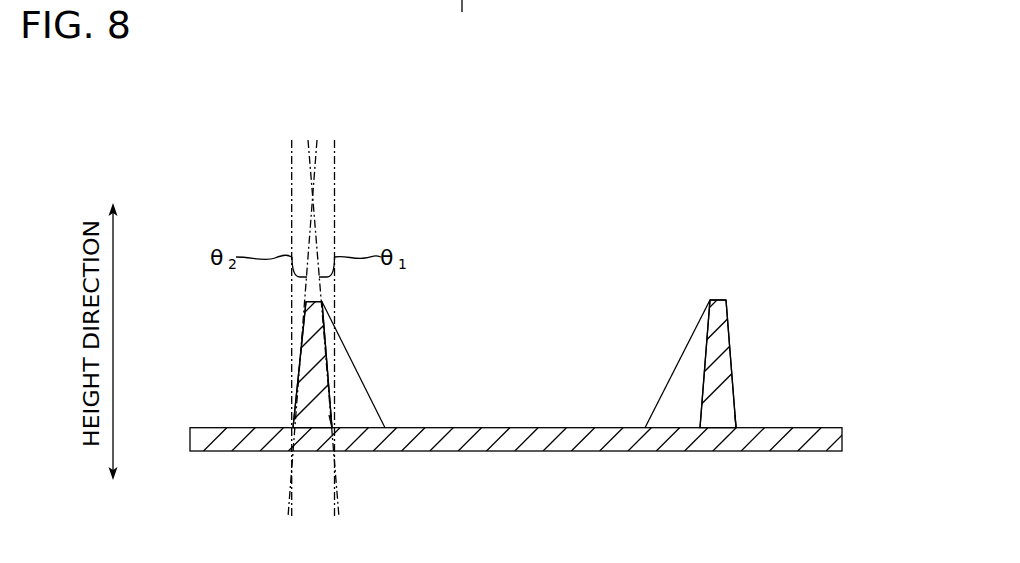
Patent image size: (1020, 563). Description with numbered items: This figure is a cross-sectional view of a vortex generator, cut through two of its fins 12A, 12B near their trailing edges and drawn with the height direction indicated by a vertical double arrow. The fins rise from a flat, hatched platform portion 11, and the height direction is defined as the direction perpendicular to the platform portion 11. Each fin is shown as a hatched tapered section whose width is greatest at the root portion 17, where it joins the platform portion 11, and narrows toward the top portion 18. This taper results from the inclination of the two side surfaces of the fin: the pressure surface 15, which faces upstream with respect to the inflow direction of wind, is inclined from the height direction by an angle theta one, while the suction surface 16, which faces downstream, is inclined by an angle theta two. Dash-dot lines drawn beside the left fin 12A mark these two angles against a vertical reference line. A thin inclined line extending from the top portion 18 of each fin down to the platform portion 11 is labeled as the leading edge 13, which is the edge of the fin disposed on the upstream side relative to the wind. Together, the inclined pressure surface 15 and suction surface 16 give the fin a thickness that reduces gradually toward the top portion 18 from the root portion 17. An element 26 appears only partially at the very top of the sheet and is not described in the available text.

The platform portion 11 is at (508, 440).
The fin 12A is at (313, 387).
The fin 12B is at (720, 370).
The leading edge 13 is at (363, 383).
The pressure surface 15 is at (326, 358).
The suction surface 16 is at (302, 345).
The root portion 17 is at (332, 428).
The top portion 18 is at (316, 300).
The element 26 is at (436, 6).